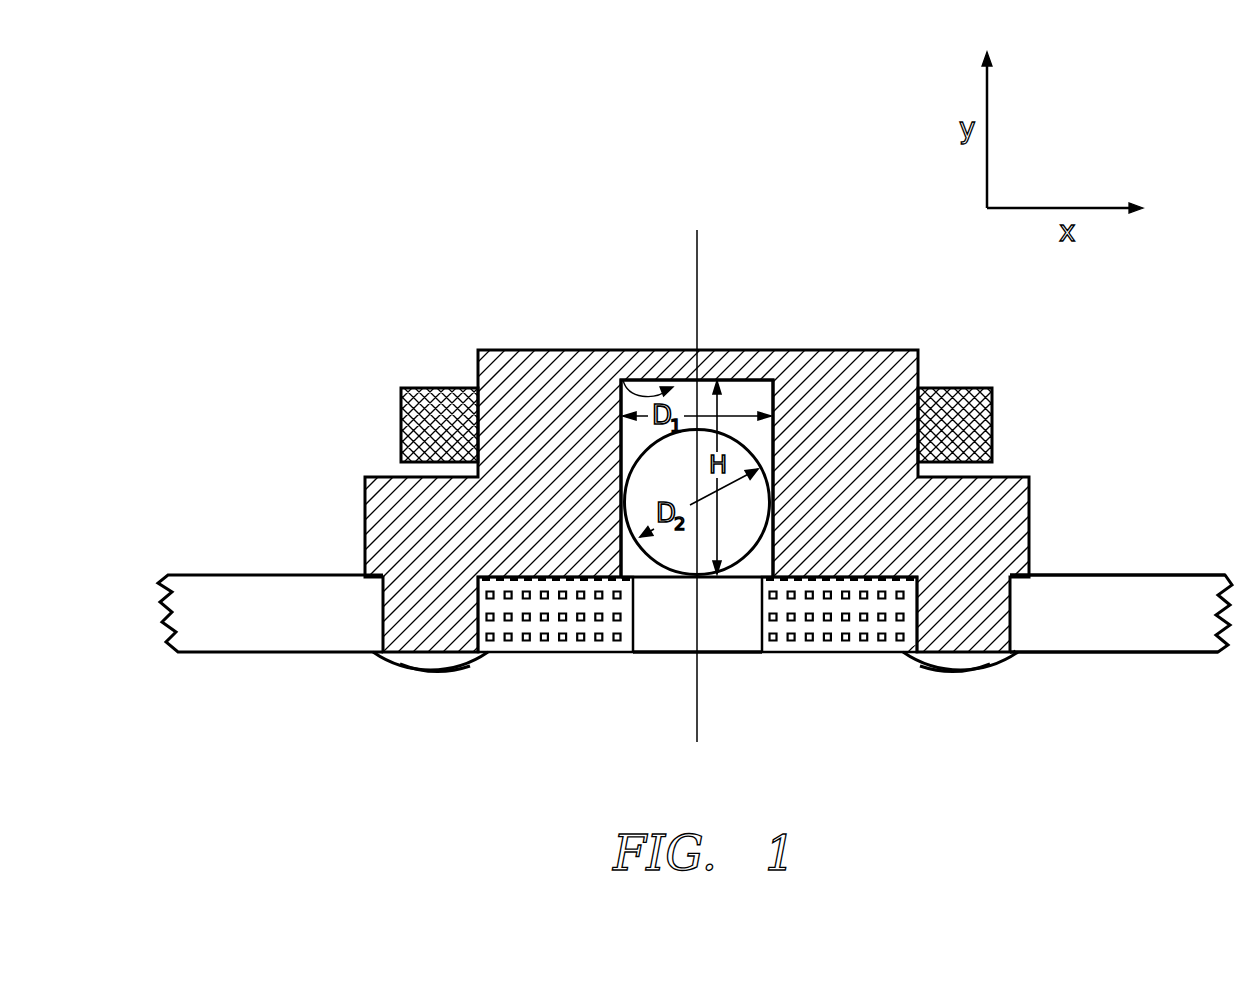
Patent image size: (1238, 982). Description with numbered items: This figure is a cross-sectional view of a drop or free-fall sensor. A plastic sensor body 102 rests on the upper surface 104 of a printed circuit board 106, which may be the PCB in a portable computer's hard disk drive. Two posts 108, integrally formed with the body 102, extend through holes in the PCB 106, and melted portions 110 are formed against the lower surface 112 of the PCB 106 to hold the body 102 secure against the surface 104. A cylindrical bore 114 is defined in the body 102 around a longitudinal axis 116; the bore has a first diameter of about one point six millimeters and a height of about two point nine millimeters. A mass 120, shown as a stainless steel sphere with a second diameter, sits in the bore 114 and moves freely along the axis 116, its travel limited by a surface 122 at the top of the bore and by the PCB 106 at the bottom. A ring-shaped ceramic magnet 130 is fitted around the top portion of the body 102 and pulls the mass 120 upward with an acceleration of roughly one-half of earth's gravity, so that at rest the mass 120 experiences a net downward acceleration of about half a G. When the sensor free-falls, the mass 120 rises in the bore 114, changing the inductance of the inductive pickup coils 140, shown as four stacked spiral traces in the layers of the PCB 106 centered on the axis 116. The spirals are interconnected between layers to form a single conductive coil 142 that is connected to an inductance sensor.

The sensor body 102 is at (875, 362).
The surface of printed circuit board 104 is at (1082, 573).
The printed circuit board 106 is at (1150, 597).
The posts 108 is at (422, 648).
The melted portions 110 is at (460, 667).
The surface of printed circuit board 112 is at (1102, 655).
The cylindrical bore 114 is at (738, 400).
The longitudinal axis 116 is at (698, 298).
The mass 120 is at (685, 558).
The surface 122 is at (624, 378).
The magnet 130 is at (428, 407).
The inductive pickup coil 140 is at (636, 580).
The conductive coil 142 is at (577, 660).